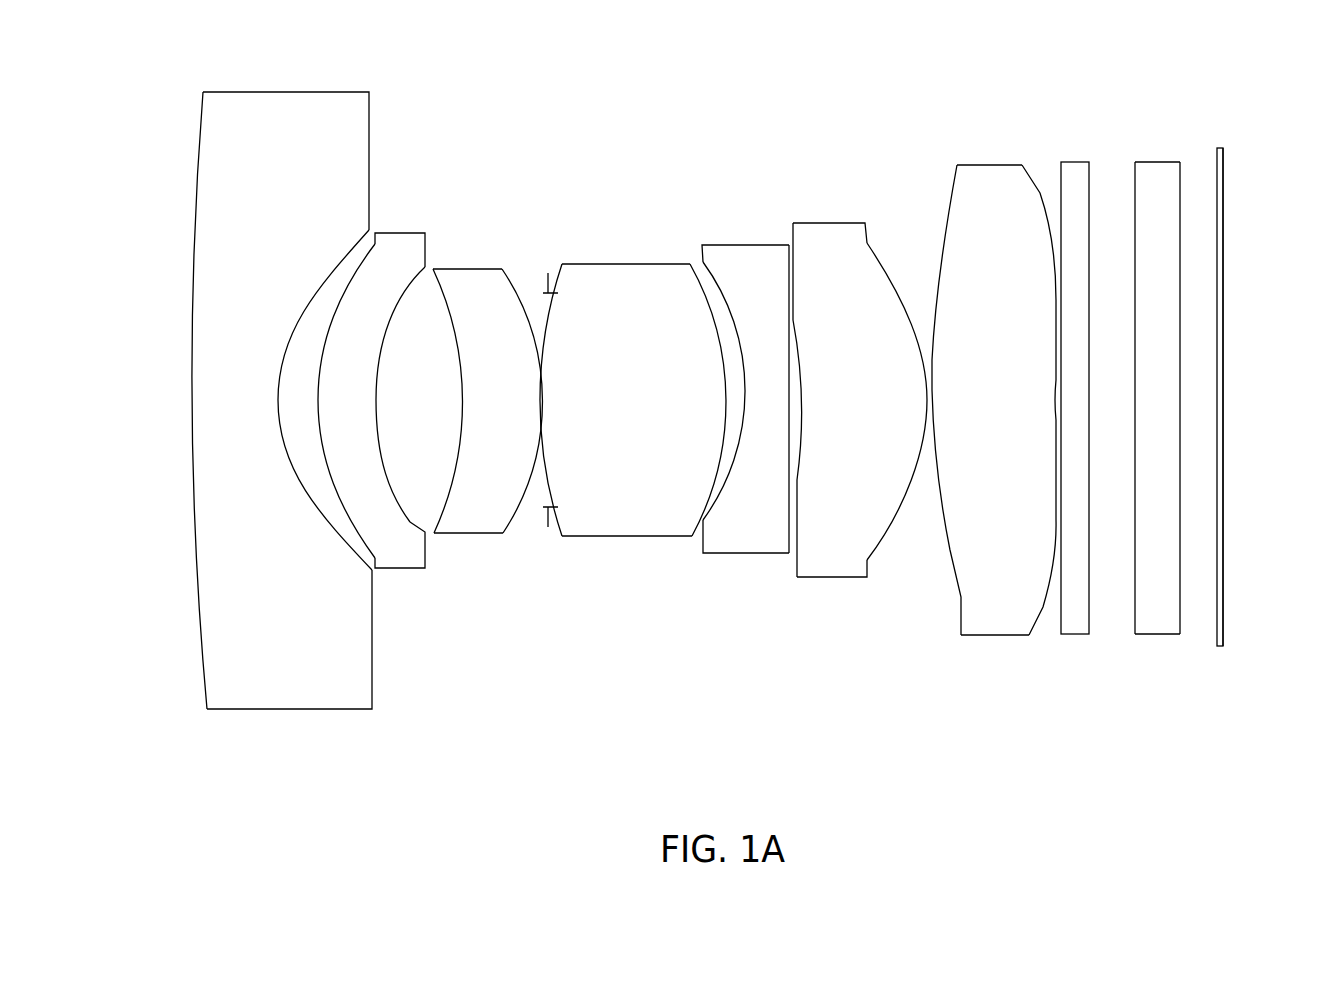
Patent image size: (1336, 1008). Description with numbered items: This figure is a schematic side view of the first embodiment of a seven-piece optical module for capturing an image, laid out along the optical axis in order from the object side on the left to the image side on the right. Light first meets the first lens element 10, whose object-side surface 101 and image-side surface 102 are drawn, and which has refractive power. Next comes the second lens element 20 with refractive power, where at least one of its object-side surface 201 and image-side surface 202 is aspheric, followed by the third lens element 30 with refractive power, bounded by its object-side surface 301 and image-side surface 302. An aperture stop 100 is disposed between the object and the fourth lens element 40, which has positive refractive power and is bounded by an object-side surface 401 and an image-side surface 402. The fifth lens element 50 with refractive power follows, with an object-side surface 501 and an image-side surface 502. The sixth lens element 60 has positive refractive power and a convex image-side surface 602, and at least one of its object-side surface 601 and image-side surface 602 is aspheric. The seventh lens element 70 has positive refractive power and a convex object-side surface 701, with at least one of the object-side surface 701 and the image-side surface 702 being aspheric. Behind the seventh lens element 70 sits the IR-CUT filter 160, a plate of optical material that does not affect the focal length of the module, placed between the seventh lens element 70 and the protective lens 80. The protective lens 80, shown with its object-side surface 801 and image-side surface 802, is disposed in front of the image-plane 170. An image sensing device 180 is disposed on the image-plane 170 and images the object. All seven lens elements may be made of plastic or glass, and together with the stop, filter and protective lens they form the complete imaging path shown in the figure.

The first lens element 10 is at (245, 413).
The object-side surface of first lens element 101 is at (207, 649).
The image-side surface of first lens element 102 is at (377, 667).
The second lens element 20 is at (424, 442).
The object-side surface of second lens element 201 is at (378, 566).
The image-side surface of second lens element 202 is at (427, 568).
The third lens element 30 is at (544, 441).
The object-side surface of third lens element 301 is at (445, 513).
The image-side surface of third lens element 302 is at (510, 512).
The aperture stop 100 is at (548, 272).
The fourth lens element 40 is at (654, 441).
The object-side surface of fourth lens element 401 is at (554, 492).
The image-side surface of fourth lens element 402 is at (708, 500).
The fifth lens element 50 is at (782, 442).
The object-side surface of fifth lens element 501 is at (714, 505).
The image-side surface of fifth lens element 502 is at (789, 540).
The sixth lens element 60 is at (878, 442).
The object-side surface of sixth lens element 601 is at (797, 537).
The image-side surface of sixth lens element 602 is at (878, 537).
The seventh lens element 70 is at (1008, 442).
The object-side surface of seventh lens element 701 is at (946, 530).
The image-side surface of seventh lens element 702 is at (1043, 603).
The IR-CUT filter 160 is at (1073, 162).
The protective lens 80 is at (1216, 354).
The object-side surface of protective lens 801 is at (1137, 230).
The image-side surface of protective lens 802 is at (1182, 323).
The image-plane 170 is at (1223, 400).
The image sensing device 180 is at (1249, 360).